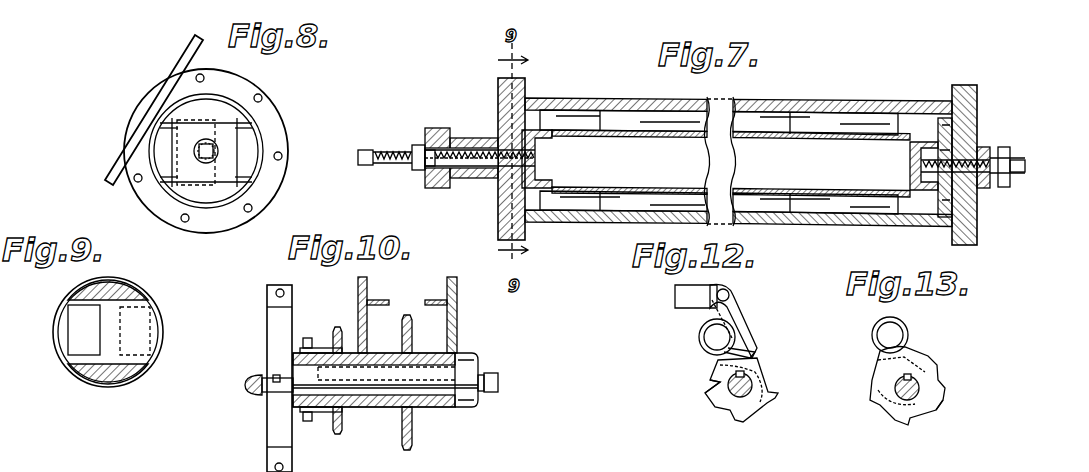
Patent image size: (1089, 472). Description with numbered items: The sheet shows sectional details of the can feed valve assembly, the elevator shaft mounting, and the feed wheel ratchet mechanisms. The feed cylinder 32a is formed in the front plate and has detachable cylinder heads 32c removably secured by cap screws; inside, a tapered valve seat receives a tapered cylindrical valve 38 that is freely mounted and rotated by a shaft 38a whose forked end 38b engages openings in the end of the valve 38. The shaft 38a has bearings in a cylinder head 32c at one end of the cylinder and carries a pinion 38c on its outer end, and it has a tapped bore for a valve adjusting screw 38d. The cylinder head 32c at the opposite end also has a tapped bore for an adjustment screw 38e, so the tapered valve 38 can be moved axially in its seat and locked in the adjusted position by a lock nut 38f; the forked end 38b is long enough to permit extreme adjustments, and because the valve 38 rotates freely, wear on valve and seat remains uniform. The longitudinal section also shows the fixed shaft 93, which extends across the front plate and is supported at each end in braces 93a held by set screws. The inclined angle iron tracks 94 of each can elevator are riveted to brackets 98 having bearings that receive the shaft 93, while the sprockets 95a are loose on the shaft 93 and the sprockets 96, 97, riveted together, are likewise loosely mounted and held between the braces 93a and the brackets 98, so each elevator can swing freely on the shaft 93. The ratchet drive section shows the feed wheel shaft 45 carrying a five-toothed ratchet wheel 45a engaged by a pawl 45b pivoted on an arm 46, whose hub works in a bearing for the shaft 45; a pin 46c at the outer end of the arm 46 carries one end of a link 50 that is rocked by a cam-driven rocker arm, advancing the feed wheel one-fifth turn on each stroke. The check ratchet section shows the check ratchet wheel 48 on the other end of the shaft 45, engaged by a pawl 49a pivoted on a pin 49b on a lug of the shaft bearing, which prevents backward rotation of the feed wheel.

In FIG. 8, the feed cylinder 32a is at (276, 133).
In FIG. 7, the feed cylinder 32a is at (820, 101).
In FIG. 7, the cylinder head 32c is at (1000, 100).
In FIG. 8, the tapered cylindrical valve 38 is at (252, 156).
In FIG. 7, the tapered cylindrical valve 38 is at (852, 207).
In FIG. 9, the tapered cylindrical valve 38 is at (148, 338).
In FIG. 8, the shaft 38a is at (204, 154).
In FIG. 7, the shaft 38a is at (537, 159).
In FIG. 8, the forked end 38b is at (198, 110).
In FIG. 7, the forked end 38b is at (556, 118).
In FIG. 9, the forked end 38b is at (130, 298).
In FIG. 7, the pinion 38c is at (441, 120).
In FIG. 8, the valve adjusting screw 38d is at (210, 147).
In FIG. 7, the valve adjusting screw 38d is at (378, 180).
In FIG. 7, the adjustment screw 38e is at (1005, 176).
In FIG. 7, the lock nut 38f is at (1015, 142).
In FIG. 10, the shaft 93 is at (259, 405).
In FIG. 10, the brace 93a is at (276, 326).
In FIG. 10, the inclined angle iron track 94 is at (433, 293).
In FIG. 10, the sprocket 95a is at (419, 436).
In FIG. 10, the sprocket 96 is at (342, 426).
In FIG. 10, the sprocket 97 is at (311, 428).
In FIG. 10, the bracket 98 is at (358, 305).
In FIG. 12, the shaft 45 is at (730, 403).
In FIG. 13, the shaft 45 is at (926, 384).
In FIG. 12, the ratchet wheel 45a is at (702, 402).
In FIG. 12, the pawl 45b is at (758, 346).
In FIG. 12, the arm 46 is at (741, 319).
In FIG. 12, the pin 46c is at (734, 297).
In FIG. 13, the check ratchet wheel 48 is at (949, 409).
In FIG. 13, the pawl 49a is at (922, 340).
In FIG. 13, the pin 49b is at (883, 347).
In FIG. 12, the link 50 is at (690, 300).